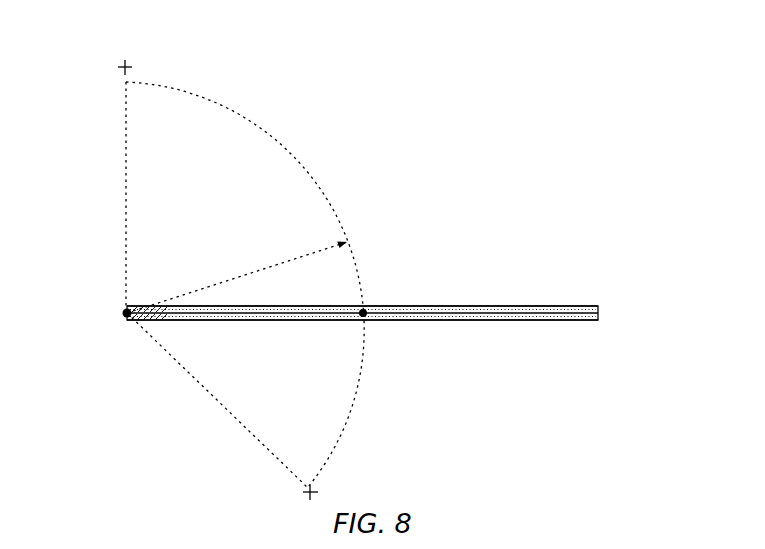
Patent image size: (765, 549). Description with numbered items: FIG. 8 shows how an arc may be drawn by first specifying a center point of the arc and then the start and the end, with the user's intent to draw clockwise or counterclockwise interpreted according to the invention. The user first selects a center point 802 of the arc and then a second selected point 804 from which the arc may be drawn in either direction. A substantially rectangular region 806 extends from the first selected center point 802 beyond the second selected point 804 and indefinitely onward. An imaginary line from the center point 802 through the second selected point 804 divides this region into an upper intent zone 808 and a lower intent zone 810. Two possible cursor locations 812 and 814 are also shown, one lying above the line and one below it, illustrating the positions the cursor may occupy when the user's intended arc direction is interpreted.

The center point 802 is at (122, 313).
The second selected point 804 is at (365, 318).
The substantially rectangular region 806 is at (606, 313).
The upper intent zone 808 is at (497, 304).
The lower intent zone 810 is at (497, 323).
The cursor location 812 is at (130, 65).
The cursor location 814 is at (316, 490).